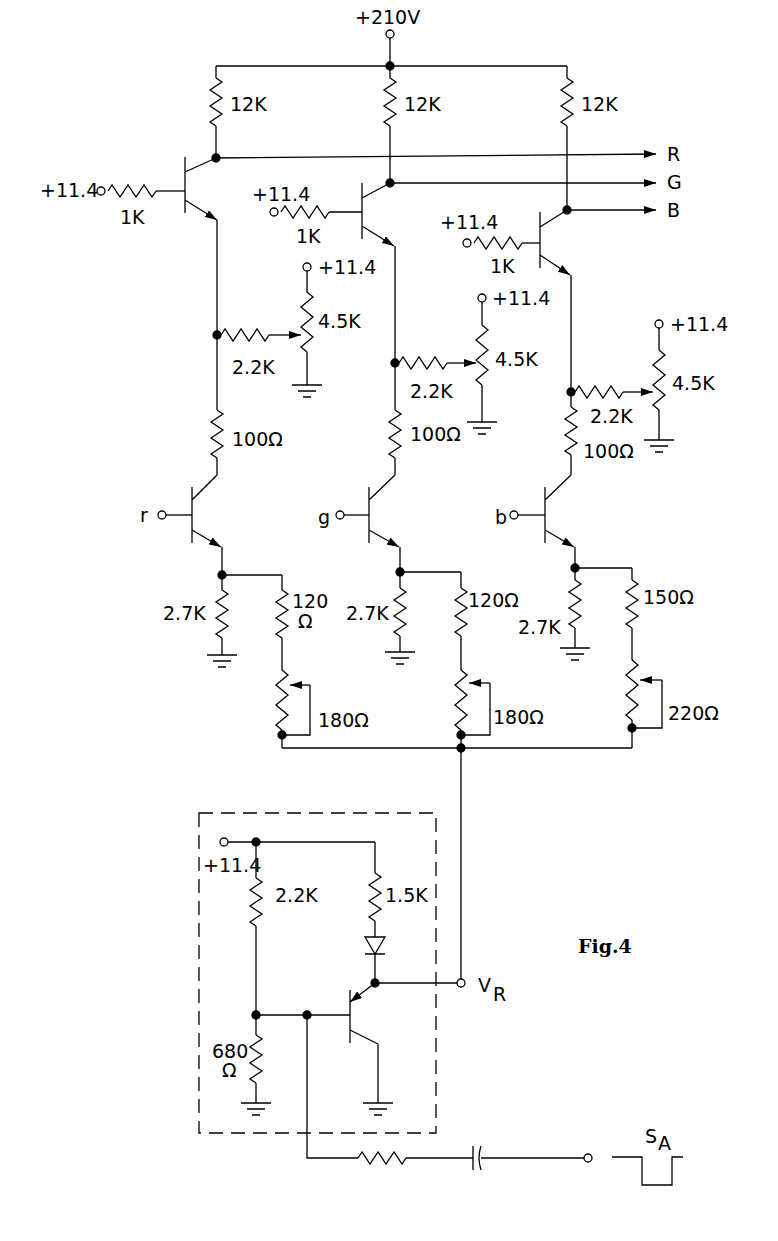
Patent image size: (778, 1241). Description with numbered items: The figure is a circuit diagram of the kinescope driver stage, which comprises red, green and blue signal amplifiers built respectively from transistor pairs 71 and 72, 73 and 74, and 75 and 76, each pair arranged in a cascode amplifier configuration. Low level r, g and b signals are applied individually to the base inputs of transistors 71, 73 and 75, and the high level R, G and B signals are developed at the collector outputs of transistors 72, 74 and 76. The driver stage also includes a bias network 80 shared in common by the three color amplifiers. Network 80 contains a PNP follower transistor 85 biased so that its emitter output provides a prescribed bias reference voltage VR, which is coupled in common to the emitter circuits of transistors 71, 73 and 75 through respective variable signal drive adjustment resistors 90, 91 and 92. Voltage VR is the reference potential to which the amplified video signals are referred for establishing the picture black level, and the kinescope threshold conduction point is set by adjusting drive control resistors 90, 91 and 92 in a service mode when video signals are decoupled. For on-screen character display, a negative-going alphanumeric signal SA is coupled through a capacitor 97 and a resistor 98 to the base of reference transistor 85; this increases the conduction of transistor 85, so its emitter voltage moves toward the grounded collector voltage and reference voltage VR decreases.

The transistor 71 is at (228, 528).
The transistor 72 is at (229, 198).
The transistor 73 is at (408, 528).
The transistor 74 is at (404, 225).
The transistor 75 is at (584, 528).
The transistor 76 is at (581, 255).
The bias network 80 is at (199, 926).
The PNP follower transistor 85 is at (386, 1029).
The variable signal drive adjustment resistor 90 is at (278, 718).
The variable signal drive adjustment resistor 91 is at (452, 718).
The variable signal drive adjustment resistor 92 is at (623, 712).
The capacitor 97 is at (497, 1165).
The resistor 98 is at (388, 1165).